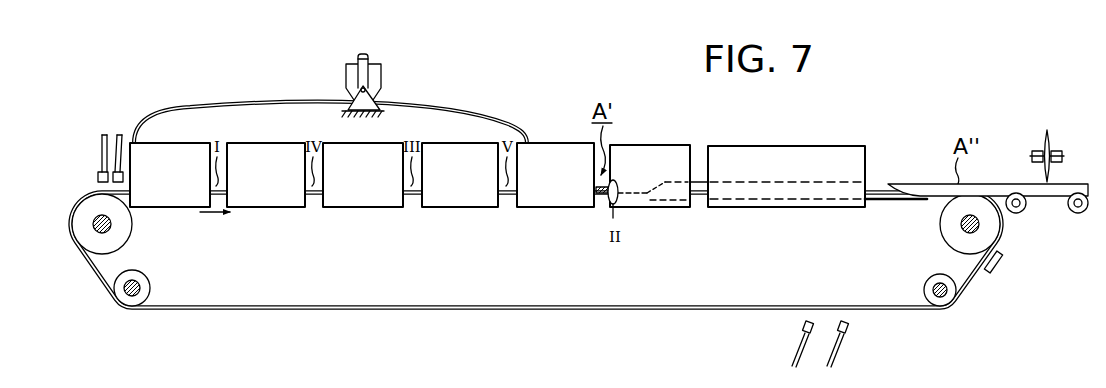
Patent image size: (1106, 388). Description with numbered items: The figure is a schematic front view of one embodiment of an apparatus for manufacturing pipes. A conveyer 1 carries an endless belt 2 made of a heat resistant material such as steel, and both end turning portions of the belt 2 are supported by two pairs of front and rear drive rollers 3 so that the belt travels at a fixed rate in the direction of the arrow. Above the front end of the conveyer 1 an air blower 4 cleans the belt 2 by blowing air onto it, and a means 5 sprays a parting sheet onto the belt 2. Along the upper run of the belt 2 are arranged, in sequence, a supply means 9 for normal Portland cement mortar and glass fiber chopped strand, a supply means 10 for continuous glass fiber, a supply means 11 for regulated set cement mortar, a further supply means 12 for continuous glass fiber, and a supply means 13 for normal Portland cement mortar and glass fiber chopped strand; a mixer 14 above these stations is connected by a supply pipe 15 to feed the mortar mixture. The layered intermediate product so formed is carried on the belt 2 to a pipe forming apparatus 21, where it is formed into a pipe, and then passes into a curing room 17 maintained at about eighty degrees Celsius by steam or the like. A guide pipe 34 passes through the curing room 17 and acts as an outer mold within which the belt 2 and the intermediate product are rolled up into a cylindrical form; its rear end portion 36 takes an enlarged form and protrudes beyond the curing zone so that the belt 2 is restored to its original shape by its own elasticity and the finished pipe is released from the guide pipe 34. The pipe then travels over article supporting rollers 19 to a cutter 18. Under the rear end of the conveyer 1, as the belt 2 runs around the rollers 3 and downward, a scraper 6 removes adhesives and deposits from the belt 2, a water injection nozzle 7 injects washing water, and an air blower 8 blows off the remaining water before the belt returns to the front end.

The conveyer 1 is at (536, 281).
The endless belt 2 is at (228, 311).
The drive rollers 3 is at (74, 232).
The air blower 4 is at (97, 178).
The parting sheet spraying means 5 is at (117, 140).
The scraper 6 is at (994, 277).
The water injection nozzle 7 is at (849, 328).
The air blower 8 is at (802, 328).
The supply means for normal Portland cement mortar and glass fiber chopped strand 9 is at (178, 188).
The supply means for continuous glass fiber 10 is at (280, 188).
The supply means for regulated set cement mortar 11 is at (376, 188).
The supply means for continuous glass fiber 12 is at (474, 188).
The supply means for normal Portland cement mortar and glass fiber chopped strand 13 is at (569, 188).
The mixer 14 is at (382, 80).
The supply pipe 15 is at (203, 107).
The curing room 17 is at (800, 178).
The cutter 18 is at (1044, 137).
The article supporting rollers 19 is at (1016, 213).
The pipe forming apparatus 21 is at (658, 178).
The guide pipe 34 is at (887, 184).
The rear end portion 36 is at (909, 203).